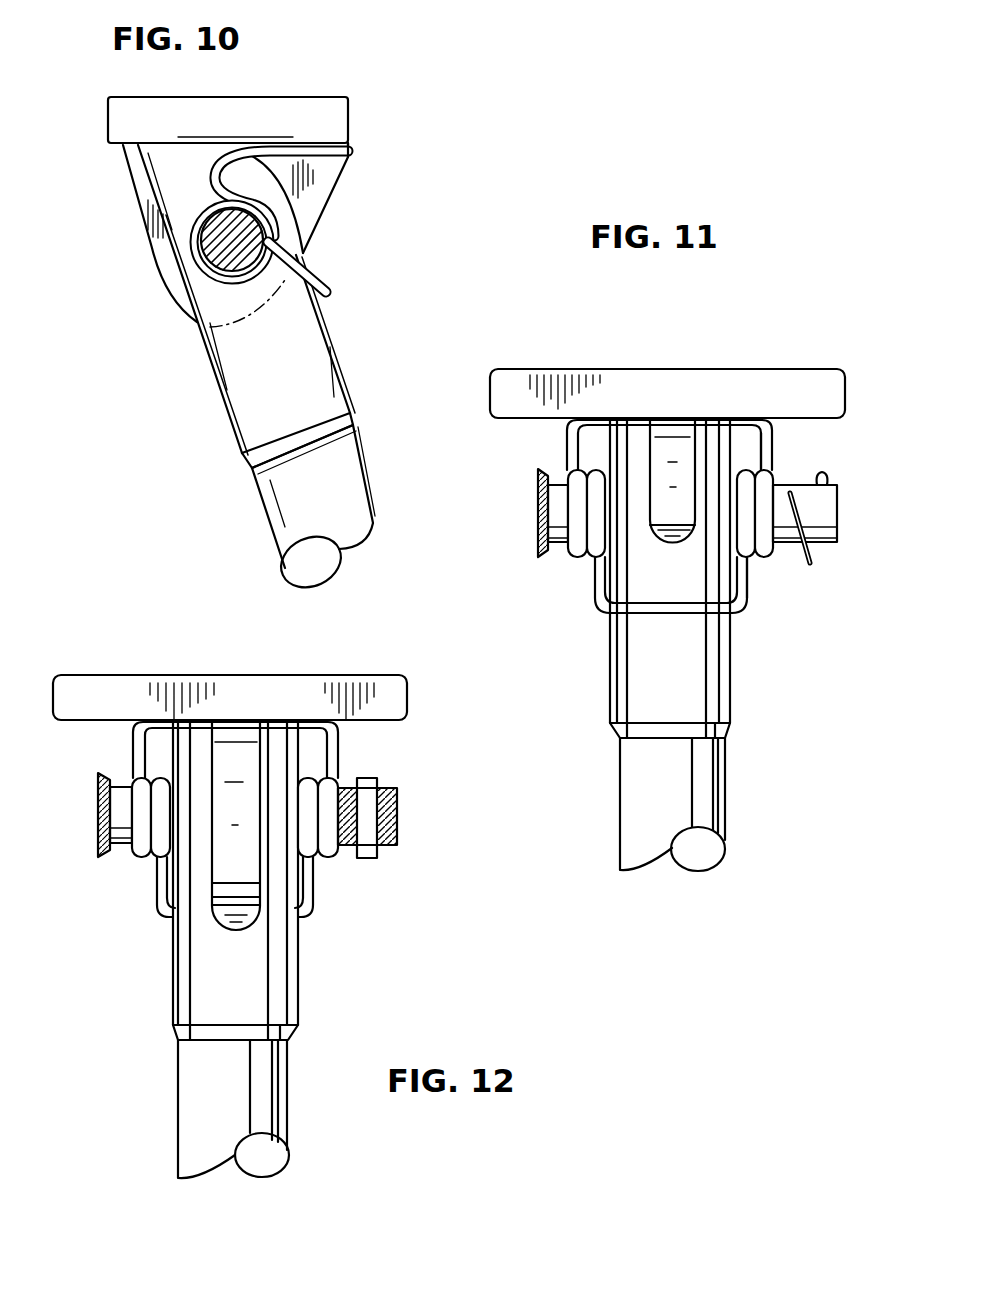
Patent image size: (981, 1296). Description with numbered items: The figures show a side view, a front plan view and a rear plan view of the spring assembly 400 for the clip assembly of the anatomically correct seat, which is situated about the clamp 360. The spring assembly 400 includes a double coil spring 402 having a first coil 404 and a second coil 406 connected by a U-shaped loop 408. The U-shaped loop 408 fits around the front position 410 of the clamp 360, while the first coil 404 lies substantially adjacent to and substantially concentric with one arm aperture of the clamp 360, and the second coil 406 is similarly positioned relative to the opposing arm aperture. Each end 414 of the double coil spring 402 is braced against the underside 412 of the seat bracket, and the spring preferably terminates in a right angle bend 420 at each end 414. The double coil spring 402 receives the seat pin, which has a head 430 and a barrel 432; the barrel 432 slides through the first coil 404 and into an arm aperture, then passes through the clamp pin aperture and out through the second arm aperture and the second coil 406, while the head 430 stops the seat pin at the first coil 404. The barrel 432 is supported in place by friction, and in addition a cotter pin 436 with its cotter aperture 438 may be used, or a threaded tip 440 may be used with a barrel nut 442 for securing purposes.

In FIG. 10, the spring assembly 400 is at (230, 347).
In FIG. 10, the double coil spring 402 is at (267, 218).
In FIG. 10, the front position 410 is at (330, 330).
In FIG. 10, the clamp 360 is at (243, 405).
In FIG. 11, the underside 412 is at (520, 427).
In FIG. 11, the end 414 is at (620, 395).
In FIG. 11, the right angle bend 420 is at (772, 438).
In FIG. 11, the head 430 is at (536, 495).
In FIG. 11, the first coil 404 is at (556, 560).
In FIG. 11, the U-shaped loop 408 is at (610, 613).
In FIG. 11, the cotter aperture 438 is at (807, 530).
In FIG. 11, the cotter pin 436 is at (828, 540).
In FIG. 11, the barrel 432 is at (783, 555).
In FIG. 11, the second coil 406 is at (757, 560).
In FIG. 12, the threaded tip 440 is at (343, 848).
In FIG. 12, the nut 442 is at (370, 858).